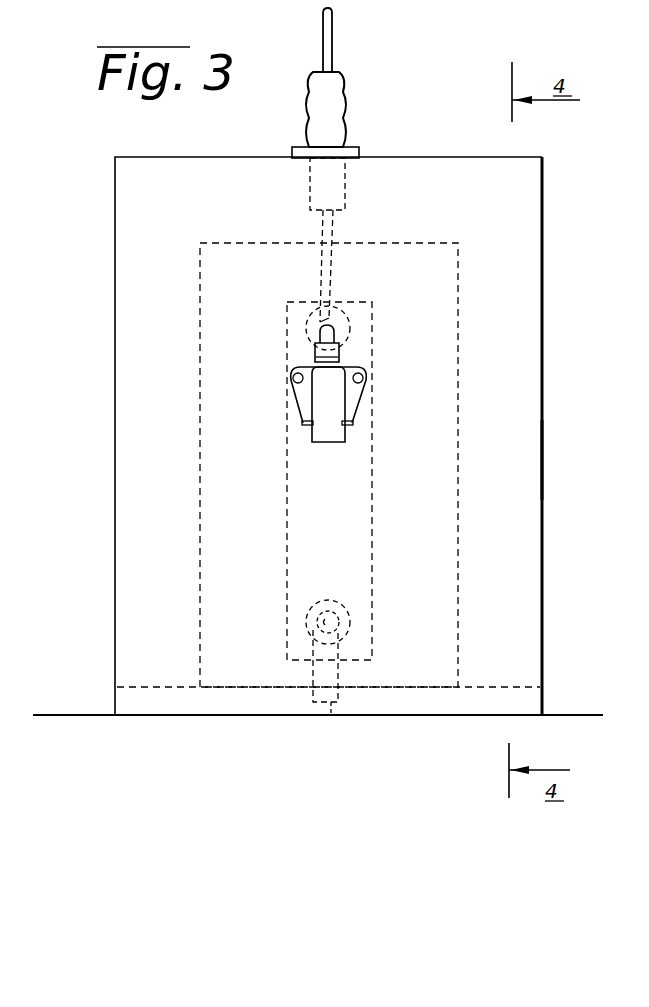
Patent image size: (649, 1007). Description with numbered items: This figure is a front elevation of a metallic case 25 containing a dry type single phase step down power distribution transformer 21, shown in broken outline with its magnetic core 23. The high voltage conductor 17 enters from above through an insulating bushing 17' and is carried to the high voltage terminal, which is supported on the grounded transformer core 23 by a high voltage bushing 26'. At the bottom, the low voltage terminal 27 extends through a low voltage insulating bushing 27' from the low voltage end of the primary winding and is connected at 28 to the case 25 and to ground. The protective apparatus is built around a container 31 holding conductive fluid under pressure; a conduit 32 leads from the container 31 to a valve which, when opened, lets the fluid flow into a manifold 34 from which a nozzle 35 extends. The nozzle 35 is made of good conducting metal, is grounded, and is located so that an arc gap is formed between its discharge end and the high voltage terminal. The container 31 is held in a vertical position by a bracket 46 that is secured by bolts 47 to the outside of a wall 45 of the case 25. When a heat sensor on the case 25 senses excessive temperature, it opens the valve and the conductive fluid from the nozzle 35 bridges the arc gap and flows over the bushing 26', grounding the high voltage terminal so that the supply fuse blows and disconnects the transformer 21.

The high voltage conductor 17 is at (362, 40).
The insulating bushing 17' is at (352, 197).
The step down power distribution transformer 21 is at (427, 245).
The magnetic core 23 is at (440, 281).
The metallic case 25 is at (542, 218).
The high voltage bushing 26' is at (364, 325).
The low voltage terminal 27 is at (283, 623).
The low voltage insulating bushing 27' is at (367, 641).
The connection 28 is at (331, 715).
The container 31 is at (328, 432).
The conduit 32 is at (318, 355).
The manifold 34 is at (341, 348).
The nozzle 35 is at (318, 325).
The wall 45 is at (522, 463).
The bracket 46 is at (357, 400).
The bolts 47 is at (291, 382).